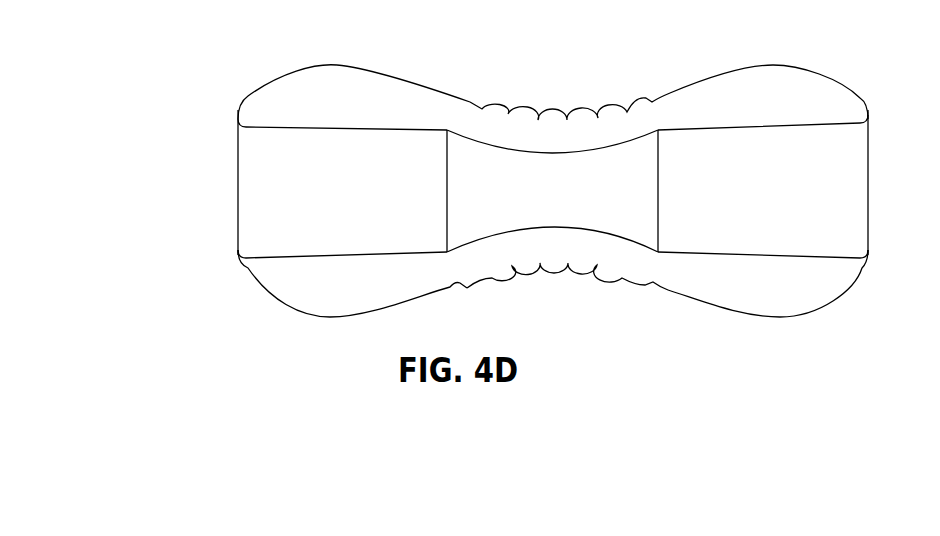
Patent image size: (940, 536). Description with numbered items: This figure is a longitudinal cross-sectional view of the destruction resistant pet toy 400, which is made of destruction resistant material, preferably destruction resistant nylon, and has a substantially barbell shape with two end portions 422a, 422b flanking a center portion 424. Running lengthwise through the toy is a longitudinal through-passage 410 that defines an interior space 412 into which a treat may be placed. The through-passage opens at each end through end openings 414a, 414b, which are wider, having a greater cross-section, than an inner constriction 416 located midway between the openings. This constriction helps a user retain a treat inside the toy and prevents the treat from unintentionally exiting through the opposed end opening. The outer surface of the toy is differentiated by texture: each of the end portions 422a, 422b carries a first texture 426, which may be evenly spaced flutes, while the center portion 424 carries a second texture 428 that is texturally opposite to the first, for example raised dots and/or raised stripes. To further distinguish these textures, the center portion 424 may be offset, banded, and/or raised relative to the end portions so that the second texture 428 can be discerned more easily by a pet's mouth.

The destruction resistant pet toy 400 is at (790, 33).
The longitudinal through-passage 410 is at (481, 189).
The interior space 412 is at (554, 210).
The end opening 414a is at (245, 198).
The end opening 414b is at (833, 195).
The inner constriction 416 is at (555, 232).
The end portion 422a is at (308, 95).
The end portion 422b is at (810, 97).
The center portion 424 is at (578, 140).
The first texture 426 is at (555, 103).
The second texture 428 is at (390, 72).